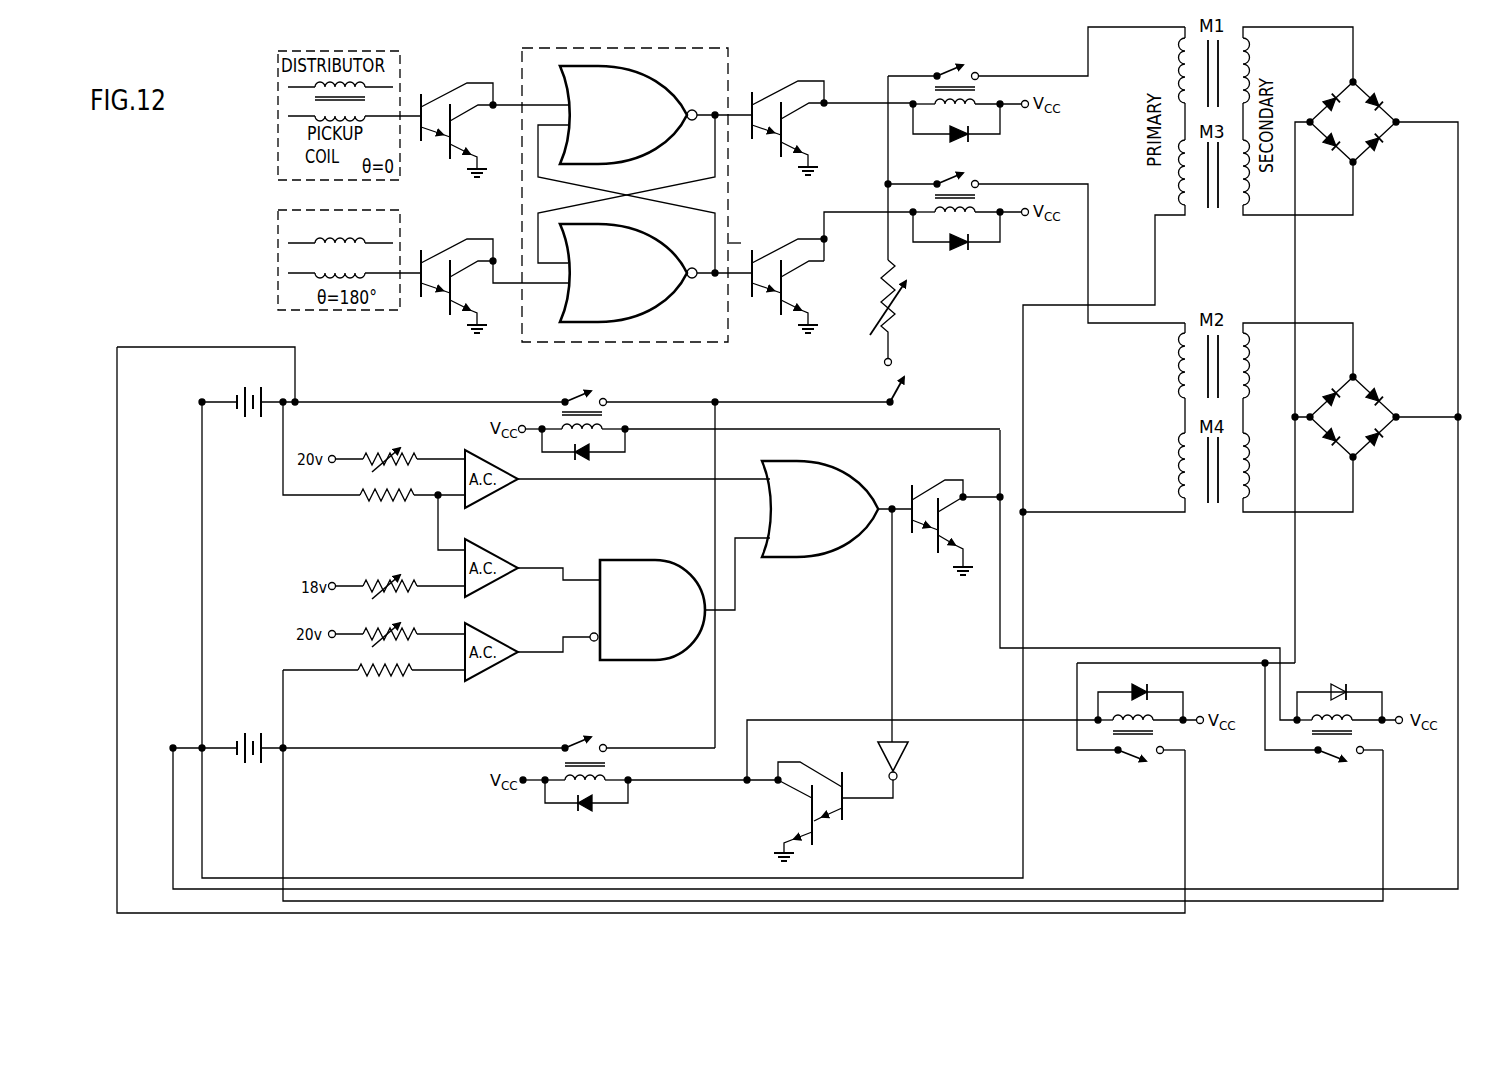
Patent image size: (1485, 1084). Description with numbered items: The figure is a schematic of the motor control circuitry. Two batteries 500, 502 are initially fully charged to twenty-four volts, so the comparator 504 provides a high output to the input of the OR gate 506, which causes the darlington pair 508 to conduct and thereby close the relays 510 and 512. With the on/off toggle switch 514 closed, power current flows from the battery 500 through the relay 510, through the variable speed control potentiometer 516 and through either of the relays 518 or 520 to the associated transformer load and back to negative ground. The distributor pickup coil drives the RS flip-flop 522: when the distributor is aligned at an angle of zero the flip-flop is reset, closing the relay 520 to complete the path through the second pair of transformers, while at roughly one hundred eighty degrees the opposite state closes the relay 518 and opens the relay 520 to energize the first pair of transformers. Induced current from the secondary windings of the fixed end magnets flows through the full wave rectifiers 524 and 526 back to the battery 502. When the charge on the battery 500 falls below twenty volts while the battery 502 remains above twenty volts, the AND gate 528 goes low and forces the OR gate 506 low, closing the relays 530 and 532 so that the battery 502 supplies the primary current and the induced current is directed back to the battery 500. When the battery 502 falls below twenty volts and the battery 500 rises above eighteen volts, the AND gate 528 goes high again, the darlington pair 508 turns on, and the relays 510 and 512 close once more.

The battery 500 is at (238, 398).
The battery 502 is at (256, 764).
The comparator 504 is at (494, 496).
The OR gate 506 is at (841, 472).
The darlington pair 508 is at (926, 486).
The relay 510 is at (621, 418).
The relay 512 is at (1398, 707).
The on/off toggle switch 514 is at (890, 398).
The variable speed control potentiometer 516 is at (884, 286).
The relay 518 is at (1012, 64).
The relay 520 is at (1012, 170).
The RS flip-flop 522 is at (670, 47).
The full wave rectifier 524 is at (1368, 131).
The full wave rectifier 526 is at (1368, 426).
The AND gate 528 is at (665, 562).
The relay 530 is at (647, 757).
The relay 532 is at (1116, 761).